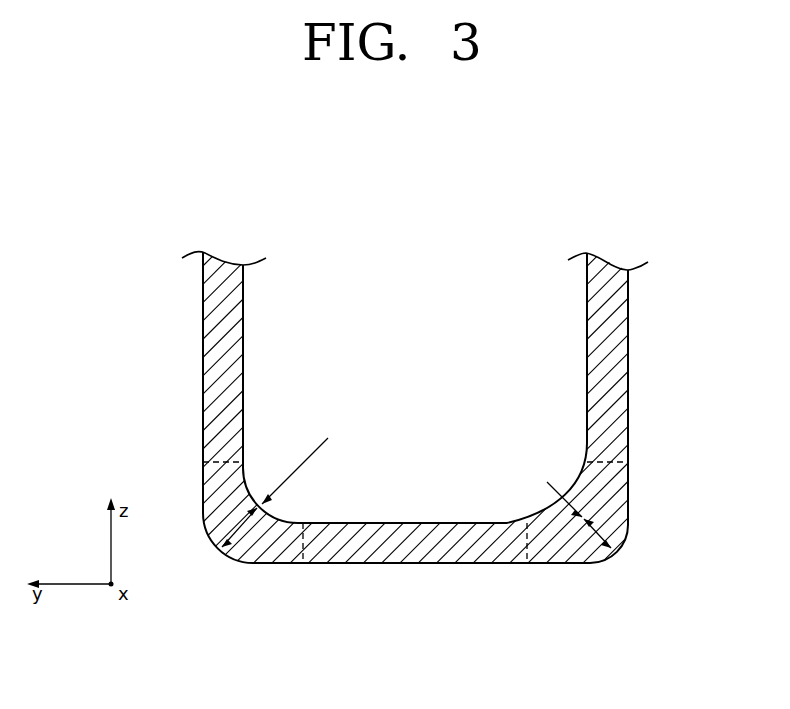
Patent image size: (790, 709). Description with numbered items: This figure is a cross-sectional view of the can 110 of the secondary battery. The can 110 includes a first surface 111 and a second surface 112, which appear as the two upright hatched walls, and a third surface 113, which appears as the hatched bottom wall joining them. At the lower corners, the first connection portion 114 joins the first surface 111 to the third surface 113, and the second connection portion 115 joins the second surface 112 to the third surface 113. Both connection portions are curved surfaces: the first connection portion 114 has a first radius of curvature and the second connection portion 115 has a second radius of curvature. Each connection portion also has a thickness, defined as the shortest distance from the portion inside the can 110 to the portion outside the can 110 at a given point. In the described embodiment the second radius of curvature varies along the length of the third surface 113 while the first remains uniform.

The can 110 is at (437, 232).
The first surface 111 is at (210, 362).
The second surface 112 is at (620, 367).
The third surface 113 is at (457, 553).
The first connection portion 114 is at (247, 553).
The second connection portion 115 is at (582, 553).